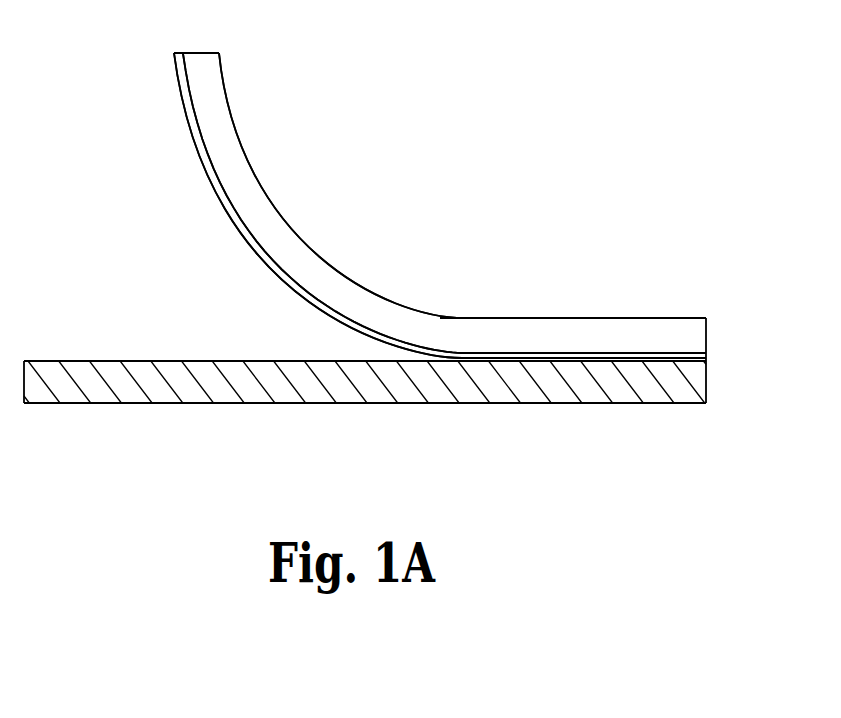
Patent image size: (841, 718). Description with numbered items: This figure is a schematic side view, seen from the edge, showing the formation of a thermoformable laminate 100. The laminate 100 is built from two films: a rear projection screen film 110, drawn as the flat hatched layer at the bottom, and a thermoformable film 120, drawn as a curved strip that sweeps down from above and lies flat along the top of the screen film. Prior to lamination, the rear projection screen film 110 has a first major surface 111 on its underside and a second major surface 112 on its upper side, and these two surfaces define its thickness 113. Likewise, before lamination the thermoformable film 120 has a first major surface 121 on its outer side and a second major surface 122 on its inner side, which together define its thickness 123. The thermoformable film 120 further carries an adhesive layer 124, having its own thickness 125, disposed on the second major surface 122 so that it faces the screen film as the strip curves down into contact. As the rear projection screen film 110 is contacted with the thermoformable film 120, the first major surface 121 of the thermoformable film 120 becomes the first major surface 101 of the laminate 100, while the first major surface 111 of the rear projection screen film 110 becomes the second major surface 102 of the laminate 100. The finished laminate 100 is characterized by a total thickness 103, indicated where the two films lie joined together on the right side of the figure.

The thermoformable laminate 100 is at (540, 88).
The first major surface of laminate 101 is at (487, 318).
The second major surface of laminate 102 is at (598, 403).
The total thickness 103 is at (577, 330).
The rear projection screen film 110 is at (400, 384).
The first major surface of rear projection screen film 111 is at (103, 403).
The second major surface of rear projection screen film 112 is at (132, 361).
The thickness of rear projection screen film 113 is at (260, 390).
The thermoformable film 120 is at (441, 207).
The first major surface of thermoformable film 121 is at (236, 128).
The second major surface of thermoformable film 122 is at (201, 138).
The thickness of thermoformable film 123 is at (270, 225).
The adhesive layer 124 is at (218, 206).
The thickness of adhesive layer 125 is at (300, 292).